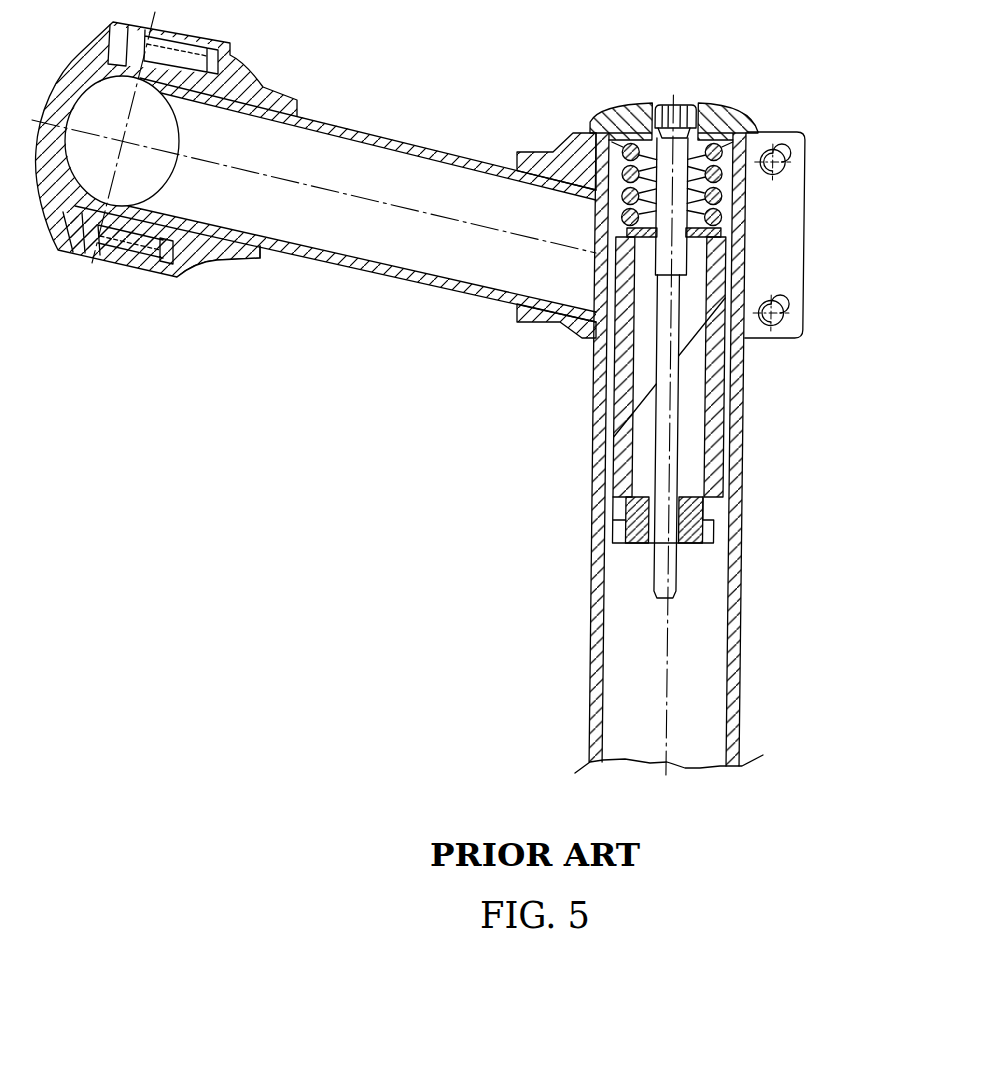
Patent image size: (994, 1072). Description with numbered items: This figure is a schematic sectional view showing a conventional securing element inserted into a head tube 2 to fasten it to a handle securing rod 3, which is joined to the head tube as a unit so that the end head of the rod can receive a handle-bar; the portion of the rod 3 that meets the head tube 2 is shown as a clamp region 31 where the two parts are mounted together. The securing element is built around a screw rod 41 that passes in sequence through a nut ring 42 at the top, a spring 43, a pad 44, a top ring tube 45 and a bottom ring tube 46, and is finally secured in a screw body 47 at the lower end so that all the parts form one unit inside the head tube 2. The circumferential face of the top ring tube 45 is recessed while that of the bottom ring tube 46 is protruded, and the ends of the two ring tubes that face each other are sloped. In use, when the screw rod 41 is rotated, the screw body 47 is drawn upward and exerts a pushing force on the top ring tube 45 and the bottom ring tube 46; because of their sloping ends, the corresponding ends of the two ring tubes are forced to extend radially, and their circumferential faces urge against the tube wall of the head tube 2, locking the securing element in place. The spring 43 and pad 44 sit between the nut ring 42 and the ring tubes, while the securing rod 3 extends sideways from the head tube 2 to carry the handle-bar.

The head tube 2 is at (597, 490).
The handle securing rod 3 is at (385, 125).
The clamp sleeve 31 is at (547, 160).
The screw rod 41 is at (648, 140).
The nut ring 42 is at (723, 117).
The spring 43 is at (723, 173).
The pad 44 is at (723, 230).
The top ring tube 45 is at (715, 277).
The bottom ring tube 46 is at (720, 400).
The screw body 47 is at (747, 543).